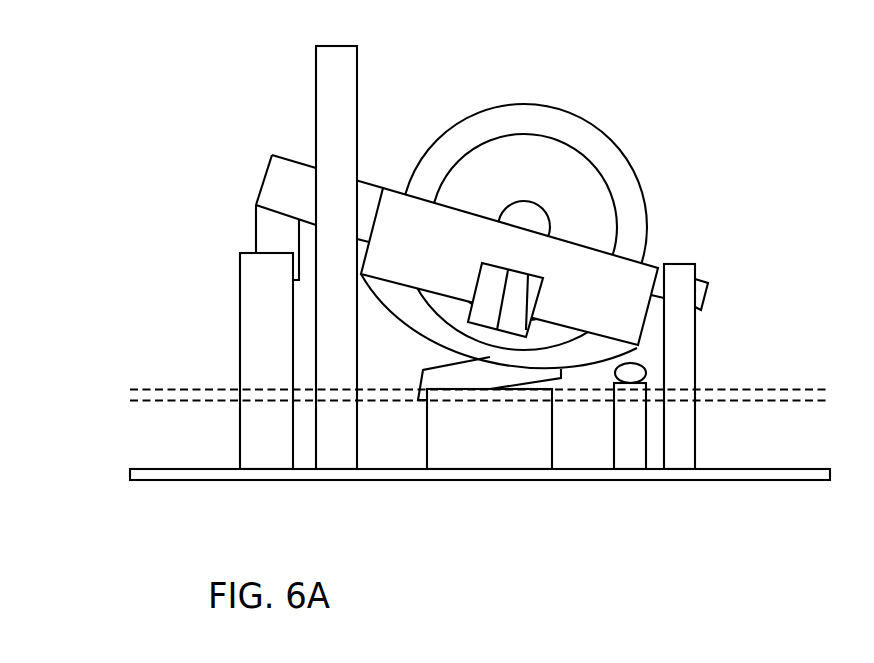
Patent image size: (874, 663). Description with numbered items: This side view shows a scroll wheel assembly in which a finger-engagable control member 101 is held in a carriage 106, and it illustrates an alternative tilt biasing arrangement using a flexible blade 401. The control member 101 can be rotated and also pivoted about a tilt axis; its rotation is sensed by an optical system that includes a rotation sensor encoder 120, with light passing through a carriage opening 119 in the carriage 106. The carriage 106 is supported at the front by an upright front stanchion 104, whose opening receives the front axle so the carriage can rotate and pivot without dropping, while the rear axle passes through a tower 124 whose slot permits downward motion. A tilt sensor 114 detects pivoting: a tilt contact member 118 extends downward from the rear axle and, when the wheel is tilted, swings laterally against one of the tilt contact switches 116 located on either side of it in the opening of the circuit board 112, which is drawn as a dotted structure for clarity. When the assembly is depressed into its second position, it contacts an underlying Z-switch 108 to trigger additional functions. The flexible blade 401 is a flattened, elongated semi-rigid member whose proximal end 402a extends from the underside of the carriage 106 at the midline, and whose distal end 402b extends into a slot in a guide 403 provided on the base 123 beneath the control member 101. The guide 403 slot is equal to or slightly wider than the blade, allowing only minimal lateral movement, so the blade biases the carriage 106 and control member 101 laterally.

The finger-engagable control member 101 is at (588, 113).
The upright front stanchion 104 is at (696, 326).
The carriage 106 is at (587, 278).
The Z-switch 108 is at (650, 393).
The circuit board 112 is at (170, 385).
The tilt sensor 114 is at (265, 178).
The tilt contact switch 116 is at (263, 255).
The tilt contact member 118 is at (265, 230).
The carriage opening 119 is at (527, 323).
The rotation sensor encoder 120 is at (498, 290).
The base 123 is at (180, 468).
The tower 124 is at (342, 77).
The flexible blade 401 is at (480, 363).
The proximal end 402a is at (551, 378).
The distal end 402b is at (413, 402).
The guide 403 is at (487, 433).